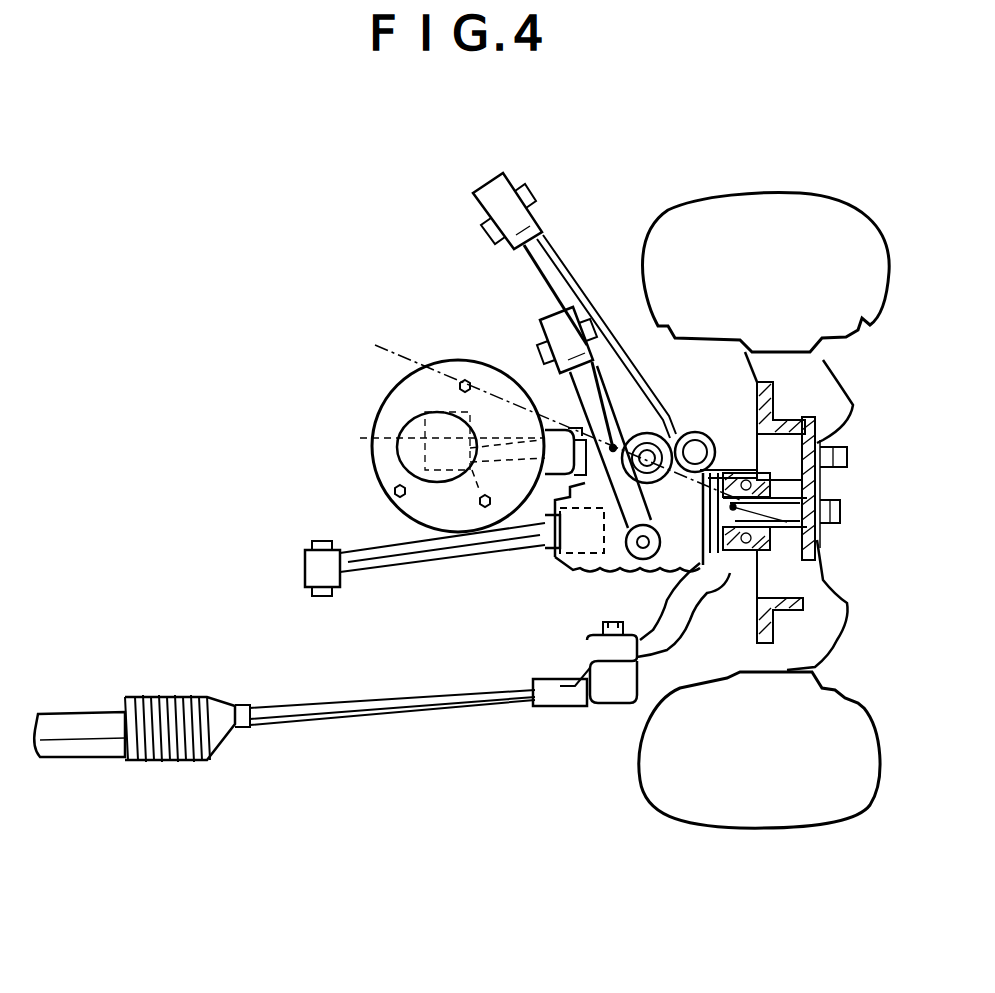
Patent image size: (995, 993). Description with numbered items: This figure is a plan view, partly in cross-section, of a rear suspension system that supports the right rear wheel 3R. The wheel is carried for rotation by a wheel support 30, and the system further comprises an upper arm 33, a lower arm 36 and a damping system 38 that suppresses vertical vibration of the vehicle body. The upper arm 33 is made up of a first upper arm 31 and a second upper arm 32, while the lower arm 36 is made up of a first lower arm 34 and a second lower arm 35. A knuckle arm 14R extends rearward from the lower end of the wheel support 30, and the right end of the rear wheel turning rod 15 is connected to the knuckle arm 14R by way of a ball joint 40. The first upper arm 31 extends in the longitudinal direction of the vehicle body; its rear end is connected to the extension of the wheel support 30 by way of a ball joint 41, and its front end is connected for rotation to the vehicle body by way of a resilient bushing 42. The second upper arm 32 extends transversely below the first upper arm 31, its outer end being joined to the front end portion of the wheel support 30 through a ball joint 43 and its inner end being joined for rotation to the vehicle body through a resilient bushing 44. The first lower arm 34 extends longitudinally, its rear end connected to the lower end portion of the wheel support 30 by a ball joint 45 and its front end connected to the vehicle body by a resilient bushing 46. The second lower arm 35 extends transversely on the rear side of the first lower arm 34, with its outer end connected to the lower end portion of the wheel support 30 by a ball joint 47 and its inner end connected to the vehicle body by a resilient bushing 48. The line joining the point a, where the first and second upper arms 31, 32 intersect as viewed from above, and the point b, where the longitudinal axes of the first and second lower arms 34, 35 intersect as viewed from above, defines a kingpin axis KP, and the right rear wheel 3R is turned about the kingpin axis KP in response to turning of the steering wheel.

The right rear wheel 3R is at (797, 228).
The wheel support 30 is at (788, 425).
The knuckle arm 14R is at (677, 617).
The ball joint 40 is at (612, 688).
The rear wheel turning rod 15 is at (352, 716).
The damping system 38 is at (365, 390).
The second upper arm 32 is at (492, 480).
The kingpin axis KP is at (432, 357).
The resilient bushing 44 is at (375, 440).
The resilient bushing 46 is at (500, 200).
The first lower arm 34 is at (570, 285).
The upper arm 33 is at (548, 386).
The resilient bushing 42 is at (555, 325).
The first upper arm 31 is at (632, 385).
The ball joint 41 is at (641, 560).
The ball joint 43 is at (658, 432).
The ball joint 45 is at (708, 432).
The point a is at (614, 444).
The point b is at (688, 521).
The lower arm 36 is at (521, 592).
The ball joint 47 is at (575, 560).
The second lower arm 35 is at (365, 556).
The resilient bushing 48 is at (305, 555).